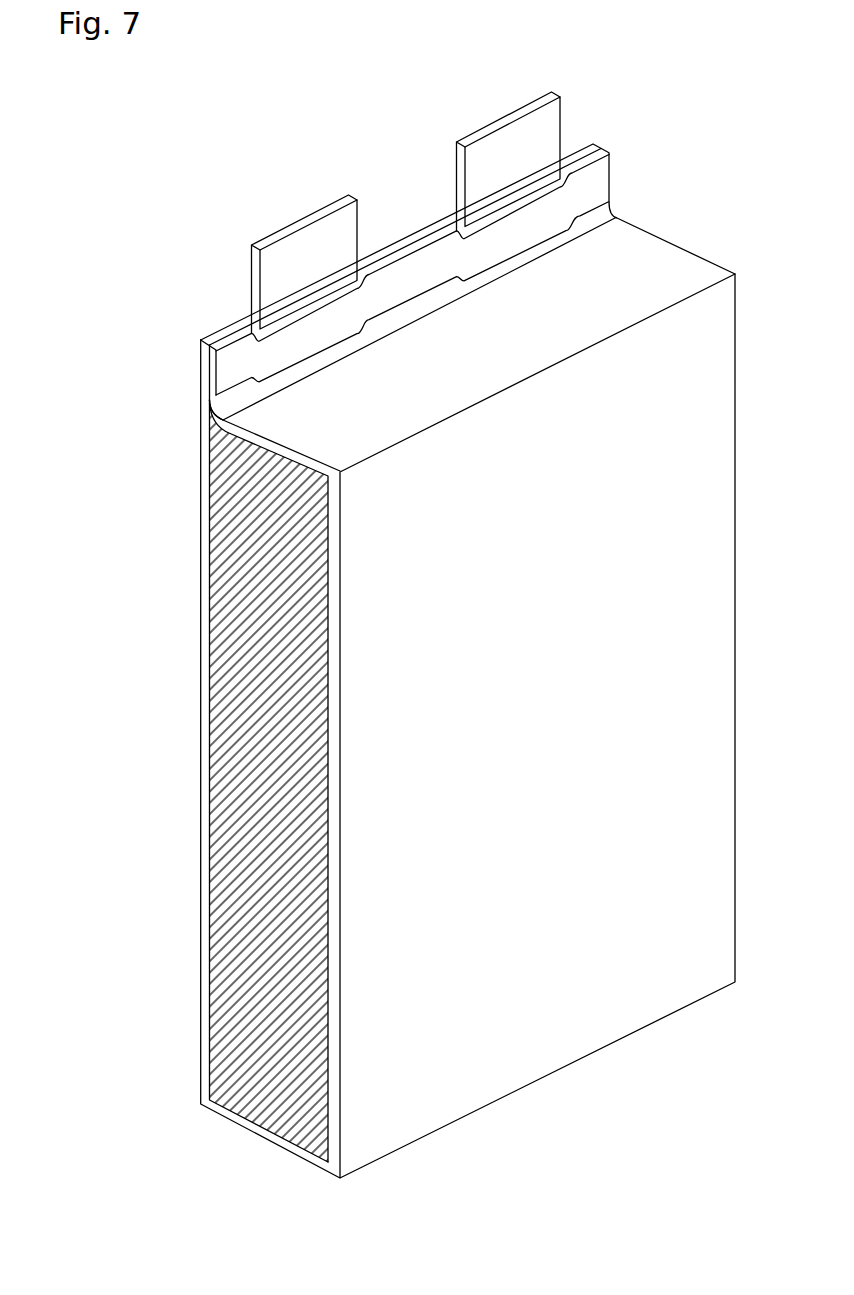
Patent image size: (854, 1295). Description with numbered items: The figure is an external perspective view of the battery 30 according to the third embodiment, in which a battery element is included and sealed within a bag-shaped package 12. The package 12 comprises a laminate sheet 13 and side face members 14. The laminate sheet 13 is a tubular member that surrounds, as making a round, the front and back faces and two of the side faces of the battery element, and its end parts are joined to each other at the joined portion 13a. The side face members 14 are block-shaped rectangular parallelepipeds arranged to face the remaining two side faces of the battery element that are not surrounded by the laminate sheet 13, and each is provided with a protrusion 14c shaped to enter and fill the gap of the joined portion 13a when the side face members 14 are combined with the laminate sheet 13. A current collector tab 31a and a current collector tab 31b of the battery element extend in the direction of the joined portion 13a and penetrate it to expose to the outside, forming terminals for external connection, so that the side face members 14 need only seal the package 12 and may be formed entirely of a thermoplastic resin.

The battery 30 is at (219, 102).
The package 12 is at (176, 226).
The laminate sheet 13 is at (159, 364).
The joined portion 13a is at (223, 329).
The side face member 14 is at (232, 690).
The protrusion 14c is at (226, 412).
The current collector tab 31a is at (292, 231).
The current collector tab 31b is at (500, 122).